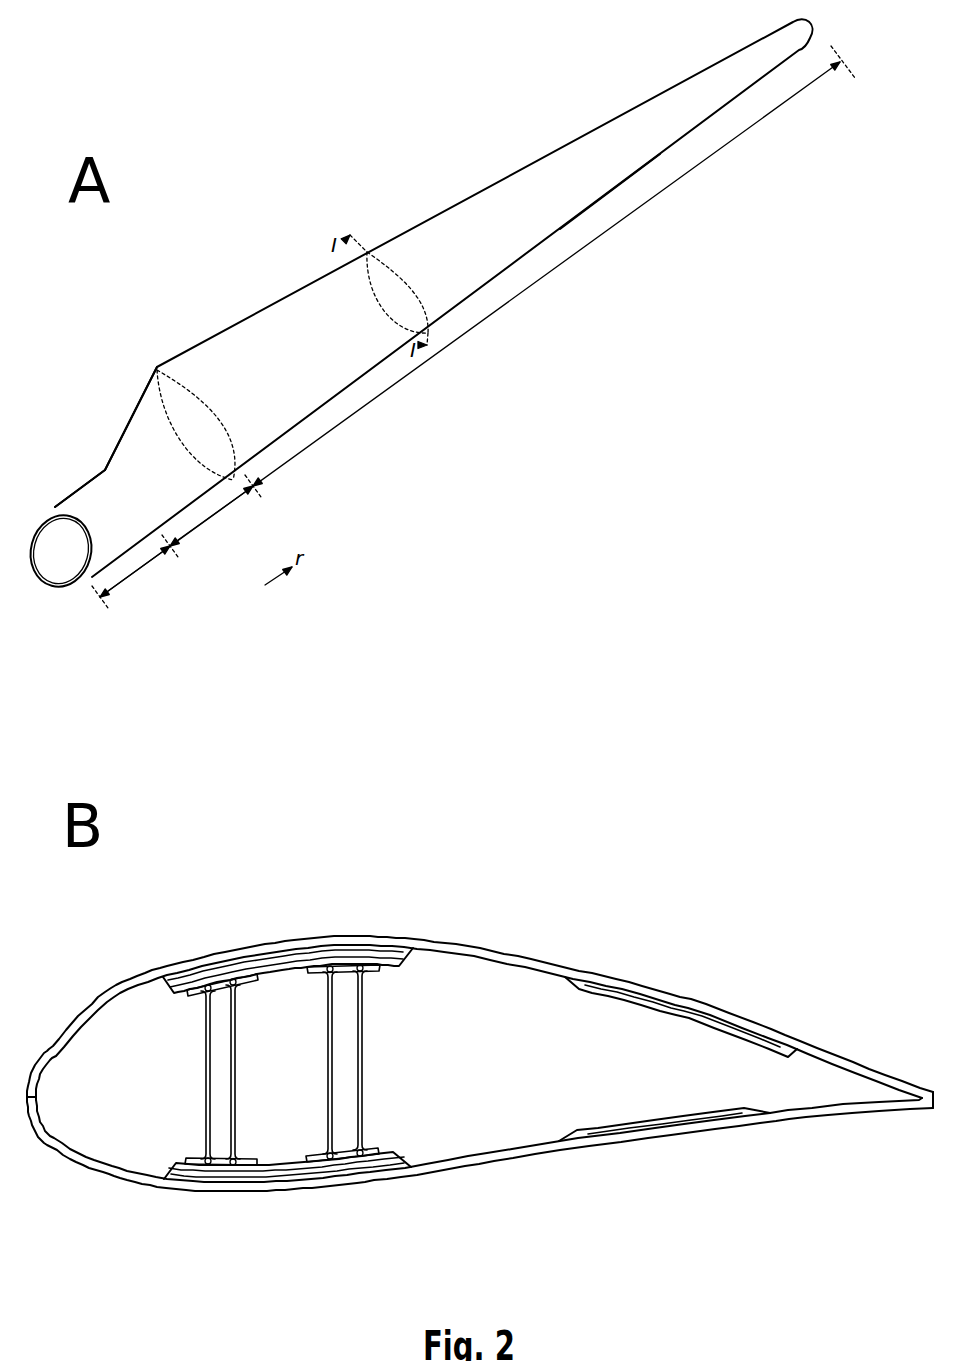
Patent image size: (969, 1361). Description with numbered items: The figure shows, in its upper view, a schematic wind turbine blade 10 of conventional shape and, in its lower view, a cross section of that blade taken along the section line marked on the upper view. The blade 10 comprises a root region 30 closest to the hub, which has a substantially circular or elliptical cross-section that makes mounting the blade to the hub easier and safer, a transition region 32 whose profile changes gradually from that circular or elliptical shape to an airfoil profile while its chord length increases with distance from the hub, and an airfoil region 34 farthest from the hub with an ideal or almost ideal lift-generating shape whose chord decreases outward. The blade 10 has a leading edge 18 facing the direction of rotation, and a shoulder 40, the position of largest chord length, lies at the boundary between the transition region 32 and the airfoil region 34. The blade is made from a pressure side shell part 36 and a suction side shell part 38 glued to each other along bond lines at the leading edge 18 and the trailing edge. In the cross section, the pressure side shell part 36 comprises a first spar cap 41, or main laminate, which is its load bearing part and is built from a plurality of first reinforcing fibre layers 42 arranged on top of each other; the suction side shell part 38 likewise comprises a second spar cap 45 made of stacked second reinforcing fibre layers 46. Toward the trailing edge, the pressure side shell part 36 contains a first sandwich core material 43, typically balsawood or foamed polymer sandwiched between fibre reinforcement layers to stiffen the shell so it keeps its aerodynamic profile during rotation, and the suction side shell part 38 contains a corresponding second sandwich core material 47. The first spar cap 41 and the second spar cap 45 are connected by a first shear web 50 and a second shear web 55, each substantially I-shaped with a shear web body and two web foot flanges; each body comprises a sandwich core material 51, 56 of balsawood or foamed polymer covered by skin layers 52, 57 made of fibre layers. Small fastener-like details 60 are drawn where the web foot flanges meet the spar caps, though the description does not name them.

In FIG. 2A, the wind turbine blade 10 is at (283, 200).
In FIG. 2A, the leading edge 18 is at (575, 218).
In FIG. 2A, the root region 30 is at (140, 573).
In FIG. 2A, the transition region 32 is at (213, 517).
In FIG. 2A, the airfoil region 34 is at (490, 320).
In FIG. 2A, the pressure side shell part 36 is at (62, 518).
In FIG. 2B, the pressure side shell part 36 is at (530, 1163).
In FIG. 2A, the suction side shell part 38 is at (31, 519).
In FIG. 2B, the suction side shell part 38 is at (517, 947).
In FIG. 2A, the shoulder 40 is at (157, 367).
In FIG. 2B, the first spar cap 41 is at (370, 1180).
In FIG. 2B, the first reinforcing fibre layers 42 is at (318, 1187).
In FIG. 2B, the first sandwich core material 43 is at (670, 1128).
In FIG. 2B, the second spar cap 45 is at (253, 938).
In FIG. 2B, the second reinforcing fibre layers 46 is at (360, 958).
In FIG. 2B, the second sandwich core material 47 is at (670, 997).
In FIG. 2B, the first shear web 50 is at (246, 1069).
In FIG. 2B, the sandwich core material 51 is at (230, 1088).
In FIG. 2B, the skin layers 52 is at (237, 1017).
In FIG. 2B, the second shear web 55 is at (370, 1063).
In FIG. 2B, the sandwich core material 56 is at (357, 1095).
In FIG. 2B, the skin layers 57 is at (362, 1020).
In FIG. 2B, the fasteners / rivets 60 is at (330, 966).